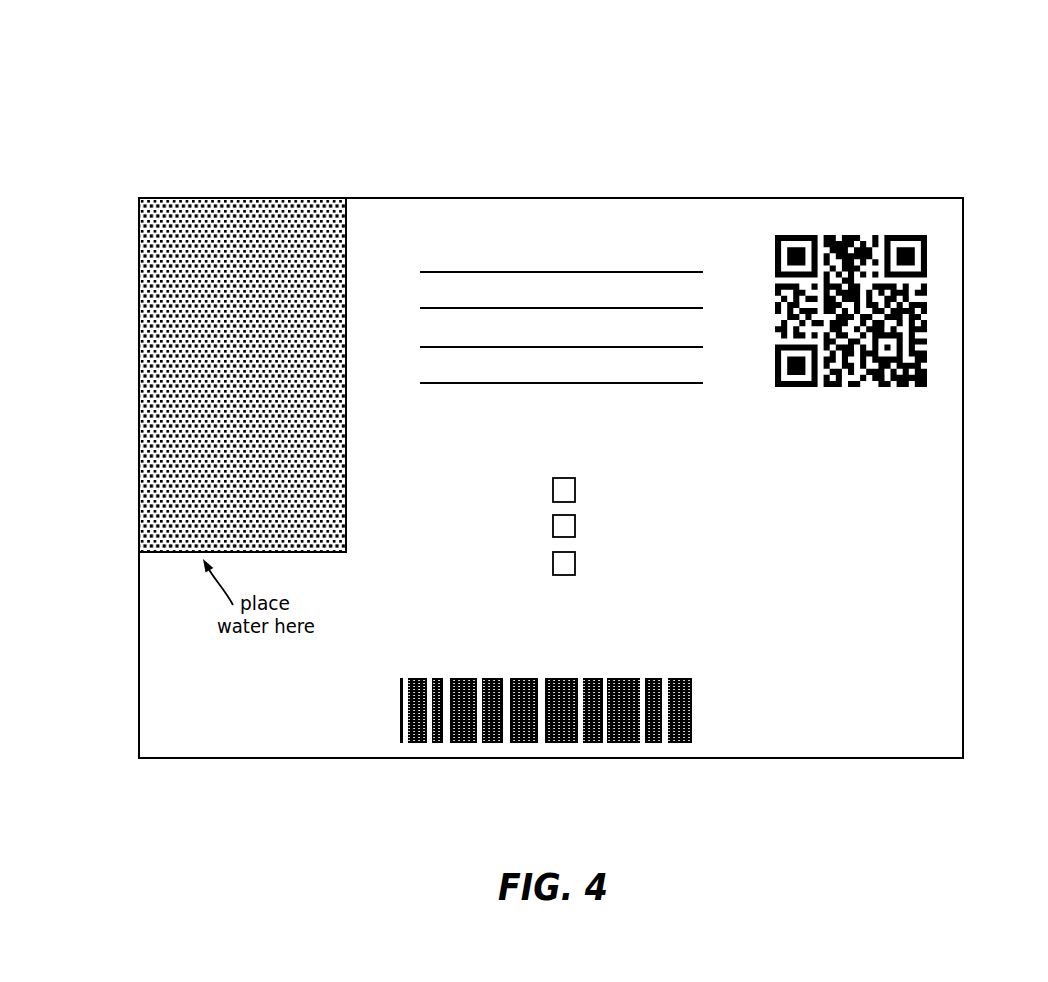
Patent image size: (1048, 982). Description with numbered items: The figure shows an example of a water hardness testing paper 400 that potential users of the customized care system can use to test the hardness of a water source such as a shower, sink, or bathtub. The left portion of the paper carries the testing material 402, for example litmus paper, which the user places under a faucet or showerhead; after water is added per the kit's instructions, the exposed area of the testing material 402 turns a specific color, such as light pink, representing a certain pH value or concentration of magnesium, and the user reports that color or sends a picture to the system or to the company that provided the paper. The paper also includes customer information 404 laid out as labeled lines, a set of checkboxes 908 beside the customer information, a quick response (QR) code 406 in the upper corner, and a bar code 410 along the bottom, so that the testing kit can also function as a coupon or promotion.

The label 400 is at (950, 108).
The testing material 402 is at (146, 332).
The customer information 404 is at (420, 216).
The quick response (QR) code 406 is at (870, 226).
The sample type checkboxes 908 is at (650, 467).
The bar code 410 is at (683, 673).